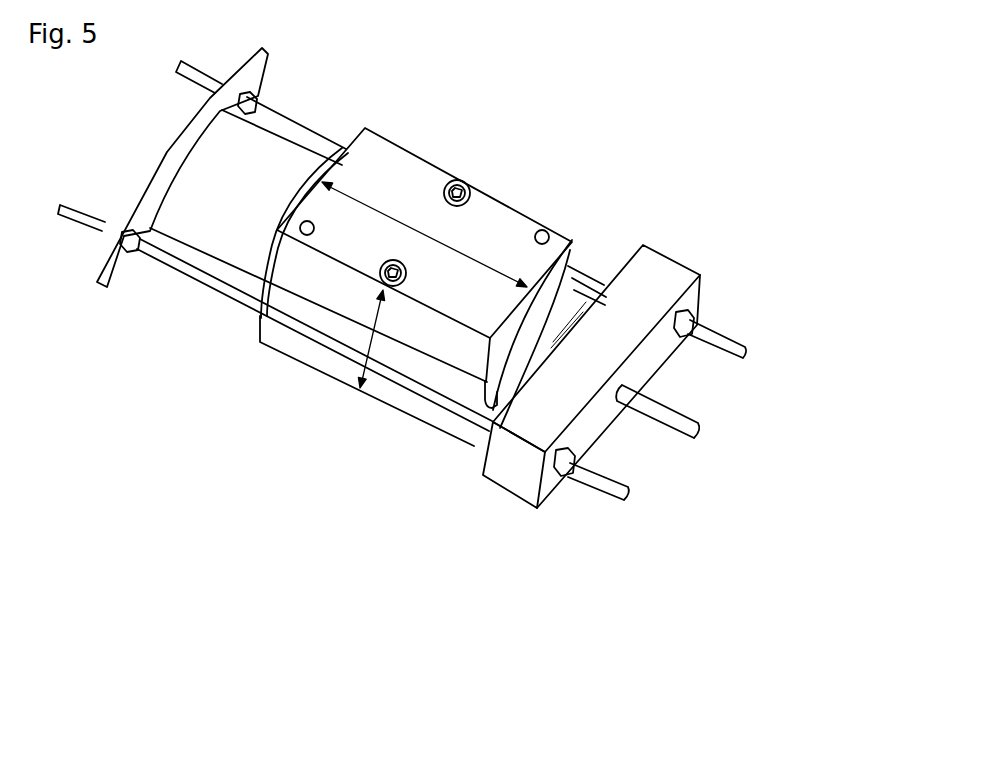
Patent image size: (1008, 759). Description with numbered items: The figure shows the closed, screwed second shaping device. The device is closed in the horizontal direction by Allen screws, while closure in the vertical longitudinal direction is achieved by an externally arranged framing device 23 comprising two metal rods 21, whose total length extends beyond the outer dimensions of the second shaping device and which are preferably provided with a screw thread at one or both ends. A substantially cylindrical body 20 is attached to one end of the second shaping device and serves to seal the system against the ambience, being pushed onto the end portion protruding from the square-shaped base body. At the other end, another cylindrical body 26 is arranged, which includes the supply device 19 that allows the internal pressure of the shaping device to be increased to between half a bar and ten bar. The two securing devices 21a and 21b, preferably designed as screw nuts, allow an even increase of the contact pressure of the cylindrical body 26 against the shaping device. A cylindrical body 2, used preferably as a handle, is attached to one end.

The cylindrical body 2 is at (733, 228).
The supply device 19 is at (667, 407).
The cylindrical body 20 is at (212, 172).
The metal rods 21 is at (237, 305).
The securing device 21a is at (688, 337).
The securing device 21b is at (567, 477).
The framing device 23 is at (120, 320).
The cylindrical body 26 is at (567, 297).